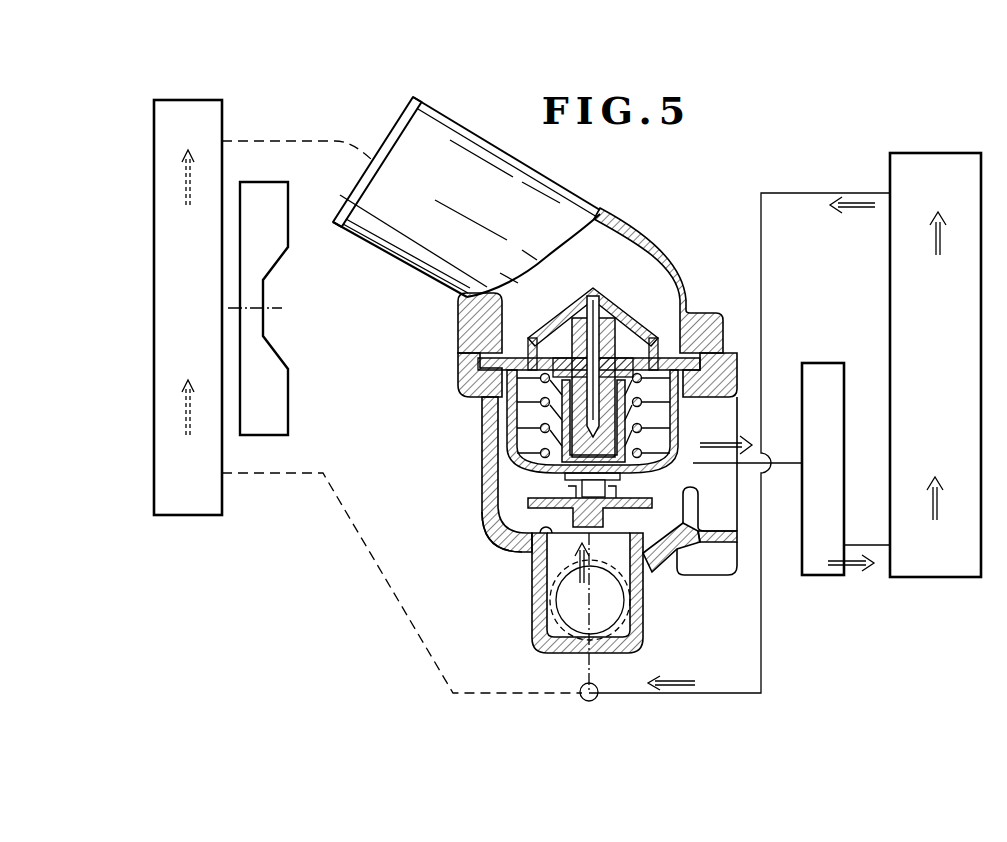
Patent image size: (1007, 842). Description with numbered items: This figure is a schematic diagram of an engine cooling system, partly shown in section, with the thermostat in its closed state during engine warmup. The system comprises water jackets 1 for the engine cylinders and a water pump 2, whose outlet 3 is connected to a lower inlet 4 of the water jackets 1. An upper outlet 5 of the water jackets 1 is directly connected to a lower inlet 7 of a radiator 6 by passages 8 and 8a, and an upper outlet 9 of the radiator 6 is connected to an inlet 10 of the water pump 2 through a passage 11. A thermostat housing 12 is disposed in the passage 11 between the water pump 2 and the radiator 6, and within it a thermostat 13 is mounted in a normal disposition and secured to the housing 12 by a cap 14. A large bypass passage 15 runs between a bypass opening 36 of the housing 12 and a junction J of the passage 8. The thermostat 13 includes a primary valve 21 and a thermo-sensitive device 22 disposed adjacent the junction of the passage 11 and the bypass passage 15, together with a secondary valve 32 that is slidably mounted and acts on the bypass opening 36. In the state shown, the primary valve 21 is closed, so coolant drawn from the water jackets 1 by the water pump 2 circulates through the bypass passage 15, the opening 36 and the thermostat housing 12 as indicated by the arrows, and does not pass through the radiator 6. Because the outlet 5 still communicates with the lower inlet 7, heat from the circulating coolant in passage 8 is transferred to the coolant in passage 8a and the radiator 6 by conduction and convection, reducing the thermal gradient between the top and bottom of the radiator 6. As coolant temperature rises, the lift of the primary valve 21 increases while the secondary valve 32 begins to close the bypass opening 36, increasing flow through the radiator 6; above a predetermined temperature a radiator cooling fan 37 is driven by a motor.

The water jackets 1 is at (890, 286).
The water pump 2 is at (836, 363).
The outlet 3 is at (846, 545).
The lower inlet 4 is at (888, 556).
The upper outlet 5 is at (860, 190).
The radiator 6 is at (154, 266).
The lower inlet 7 is at (402, 583).
The passage 8 is at (762, 662).
The passage 8a is at (453, 680).
The upper outlet 9 is at (297, 138).
The inlet 10 is at (803, 463).
The passage 11 is at (312, 142).
The thermostat housing 12 is at (527, 503).
The thermostat 13 is at (513, 438).
The cap 14 is at (634, 238).
The bypass passage 15 is at (588, 672).
The primary valve 21 is at (528, 428).
The thermo-sensitive device 22 is at (642, 426).
The secondary valve 32 is at (528, 547).
The bypass opening 36 is at (543, 536).
The radiator cooling fan 37 is at (292, 248).
The junction J is at (584, 702).